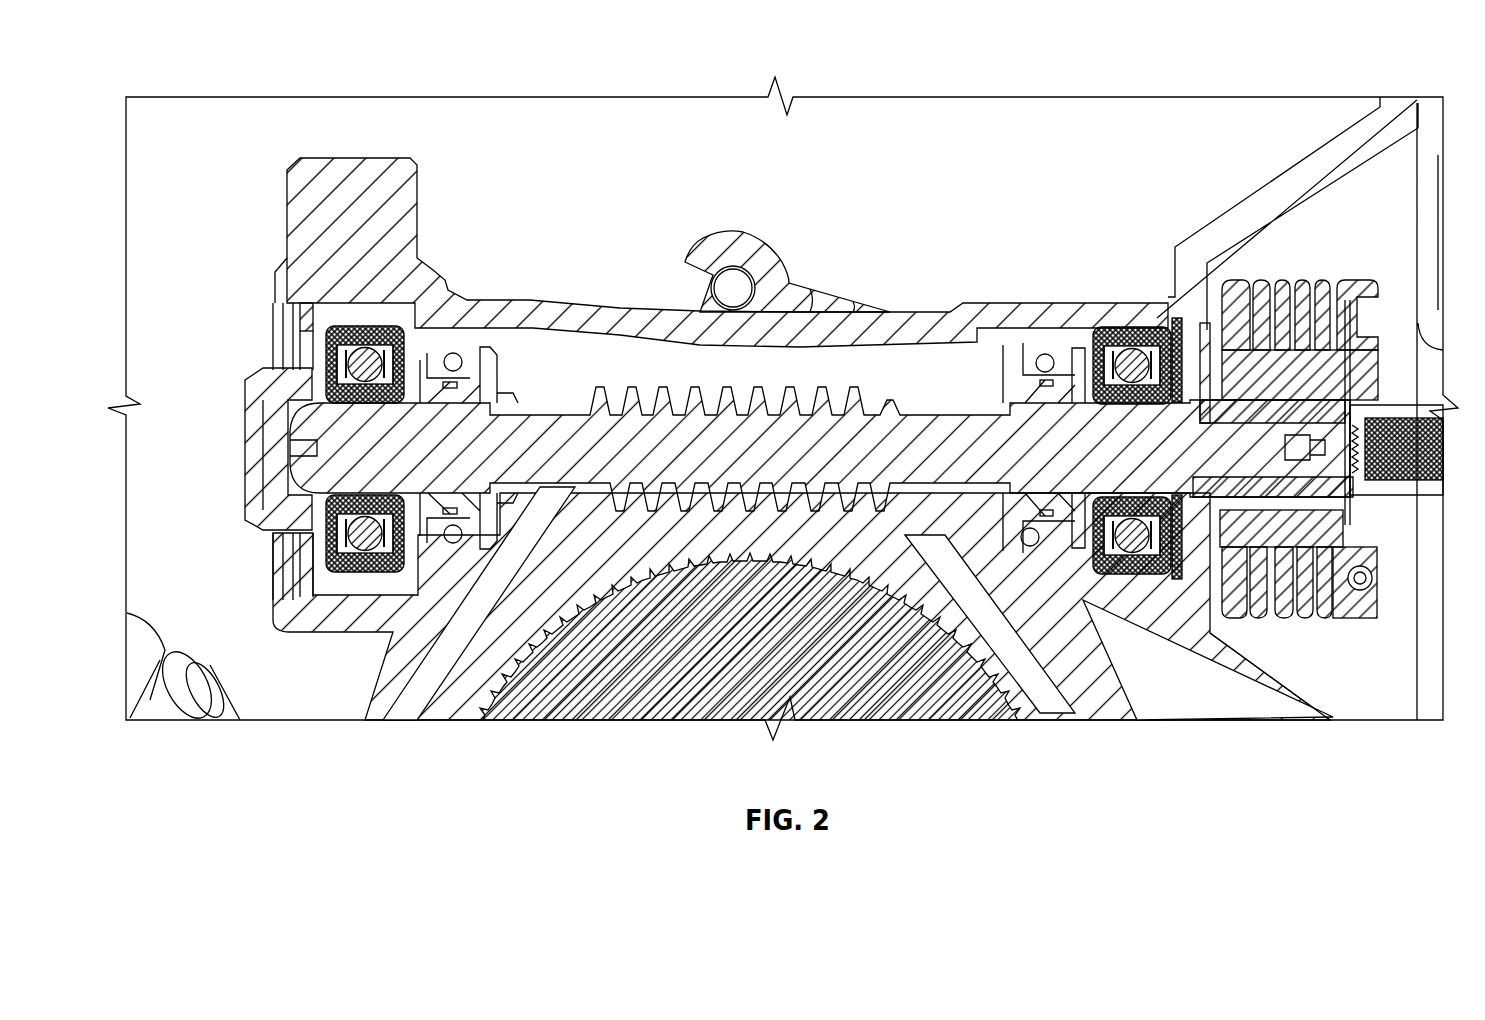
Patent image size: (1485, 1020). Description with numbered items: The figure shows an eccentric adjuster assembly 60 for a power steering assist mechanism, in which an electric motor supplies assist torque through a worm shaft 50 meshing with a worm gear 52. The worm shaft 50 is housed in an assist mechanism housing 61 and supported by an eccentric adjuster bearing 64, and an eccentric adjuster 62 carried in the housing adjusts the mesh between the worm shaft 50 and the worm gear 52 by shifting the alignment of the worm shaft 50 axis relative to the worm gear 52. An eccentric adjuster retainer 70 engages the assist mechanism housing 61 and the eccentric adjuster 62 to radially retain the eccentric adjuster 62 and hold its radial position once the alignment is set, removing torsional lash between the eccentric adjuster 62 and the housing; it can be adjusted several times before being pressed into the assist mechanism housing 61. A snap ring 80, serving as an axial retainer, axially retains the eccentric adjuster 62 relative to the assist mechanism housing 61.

The eccentric adjuster assembly 60 is at (193, 72).
The assist mechanism housing 61 is at (297, 192).
The eccentric adjuster 62 is at (245, 508).
The eccentric adjuster bearing 64 is at (322, 628).
The eccentric adjuster retainer 70 is at (293, 348).
The snap ring 80 is at (298, 306).
The worm shaft 50 is at (655, 452).
The worm gear 52 is at (522, 725).